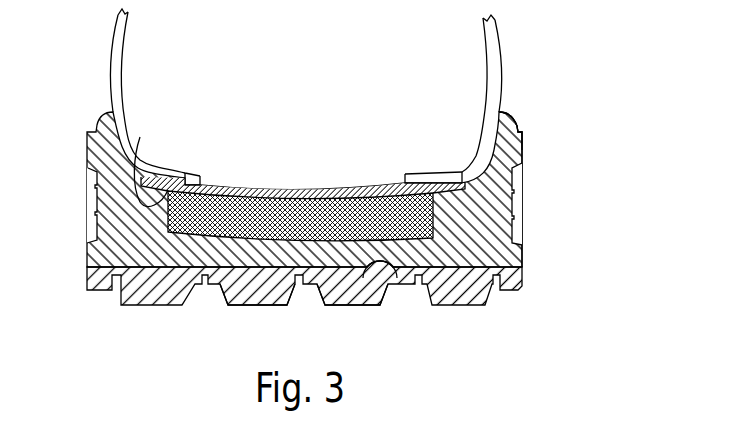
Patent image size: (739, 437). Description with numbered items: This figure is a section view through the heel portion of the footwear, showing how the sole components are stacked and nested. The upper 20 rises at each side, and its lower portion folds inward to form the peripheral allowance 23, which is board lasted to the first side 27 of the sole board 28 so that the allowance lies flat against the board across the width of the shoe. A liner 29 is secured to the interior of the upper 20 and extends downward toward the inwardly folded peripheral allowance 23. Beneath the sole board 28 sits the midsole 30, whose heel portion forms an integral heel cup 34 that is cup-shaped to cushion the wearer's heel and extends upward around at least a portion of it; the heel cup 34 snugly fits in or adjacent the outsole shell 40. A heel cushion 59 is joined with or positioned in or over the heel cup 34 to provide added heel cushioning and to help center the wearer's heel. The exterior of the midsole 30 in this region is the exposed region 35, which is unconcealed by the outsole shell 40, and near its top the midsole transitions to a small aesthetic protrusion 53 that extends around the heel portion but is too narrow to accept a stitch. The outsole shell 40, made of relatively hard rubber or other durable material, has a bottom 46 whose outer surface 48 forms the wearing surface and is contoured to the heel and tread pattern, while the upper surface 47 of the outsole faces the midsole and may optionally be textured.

The upper 20 is at (103, 70).
The peripheral allowance 23 is at (427, 172).
The first side of sole board 27 is at (186, 173).
The sole board 28 is at (277, 178).
The liner 29 is at (151, 162).
The midsole 30 is at (103, 163).
The heel cup 34 is at (500, 220).
The exposed region 35 is at (97, 202).
The outsole shell 40 is at (77, 279).
The bottom 46 is at (265, 306).
The upper surface 47 is at (395, 273).
The outer surface 48 is at (358, 306).
The aesthetic protrusion 53 is at (523, 148).
The heel cushion 59 is at (419, 232).